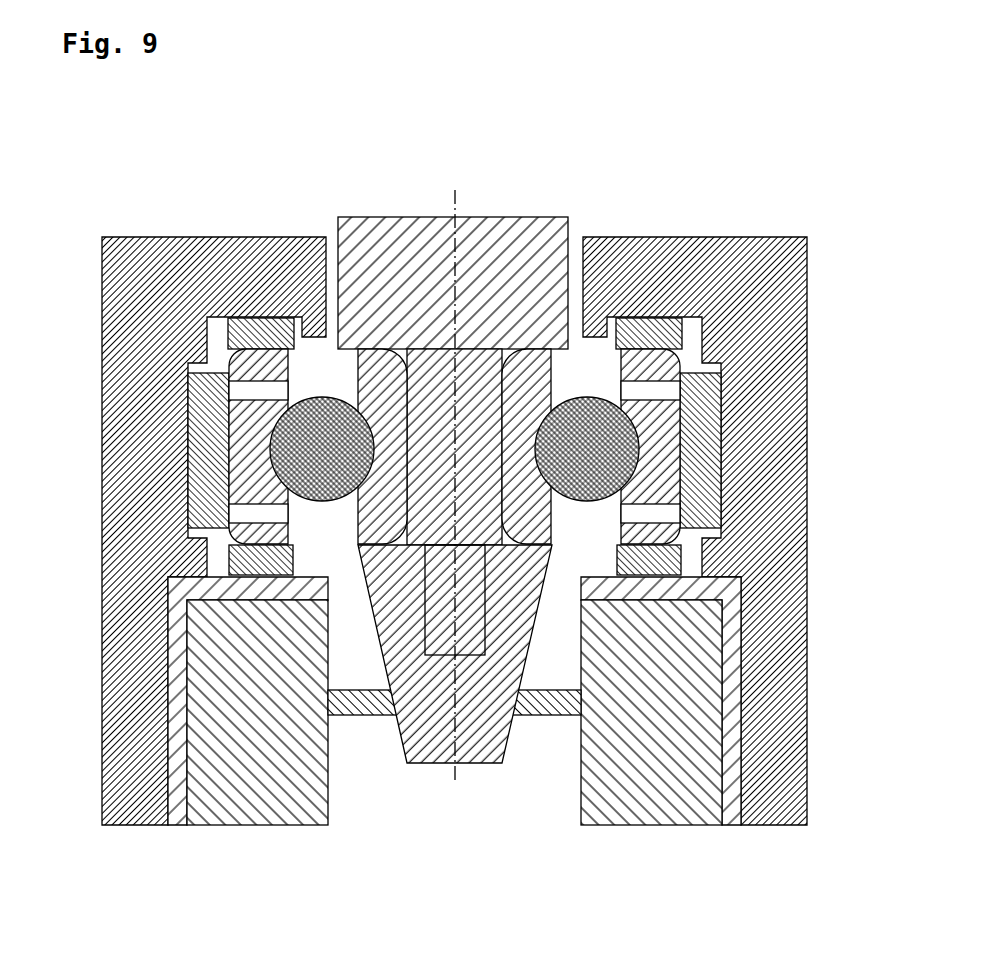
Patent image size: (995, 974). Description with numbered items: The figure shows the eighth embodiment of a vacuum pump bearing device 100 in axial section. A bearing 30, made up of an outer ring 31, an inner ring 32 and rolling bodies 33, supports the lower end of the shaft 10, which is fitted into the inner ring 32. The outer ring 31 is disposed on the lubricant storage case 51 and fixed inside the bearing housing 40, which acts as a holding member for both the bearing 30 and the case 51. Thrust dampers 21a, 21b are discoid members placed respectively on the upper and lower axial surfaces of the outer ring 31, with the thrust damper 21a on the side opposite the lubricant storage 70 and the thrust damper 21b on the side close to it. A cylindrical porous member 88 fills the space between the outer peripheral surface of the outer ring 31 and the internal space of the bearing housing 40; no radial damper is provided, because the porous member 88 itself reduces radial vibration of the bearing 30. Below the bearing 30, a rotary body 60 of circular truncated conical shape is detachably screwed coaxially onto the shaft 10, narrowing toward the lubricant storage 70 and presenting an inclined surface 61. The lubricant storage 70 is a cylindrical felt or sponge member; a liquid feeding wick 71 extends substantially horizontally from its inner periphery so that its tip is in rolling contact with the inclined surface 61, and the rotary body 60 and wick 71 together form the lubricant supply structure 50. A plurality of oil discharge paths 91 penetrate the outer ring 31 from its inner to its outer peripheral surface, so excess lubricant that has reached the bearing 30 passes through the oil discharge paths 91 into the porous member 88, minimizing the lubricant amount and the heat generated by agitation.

The vacuum pump bearing device 100 is at (740, 150).
The shaft 10 is at (517, 252).
The thrust damper 21a is at (257, 325).
The thrust damper 21b is at (663, 560).
The bearing 30 is at (247, 365).
The outer ring 31 is at (242, 462).
The inner ring 32 is at (372, 380).
The rolling bodies 33 is at (284, 489).
The bearing housing 40 is at (745, 272).
The lubricant supply structure 50 is at (588, 870).
The lubricant storage case 51 is at (218, 588).
The rotary body 60 is at (498, 710).
The inclined surface 61 is at (383, 692).
The lubricant storage 70 is at (680, 755).
The liquid feeding wick 71 is at (568, 703).
The porous member 88 is at (203, 440).
The oil discharge paths 91 is at (657, 392).